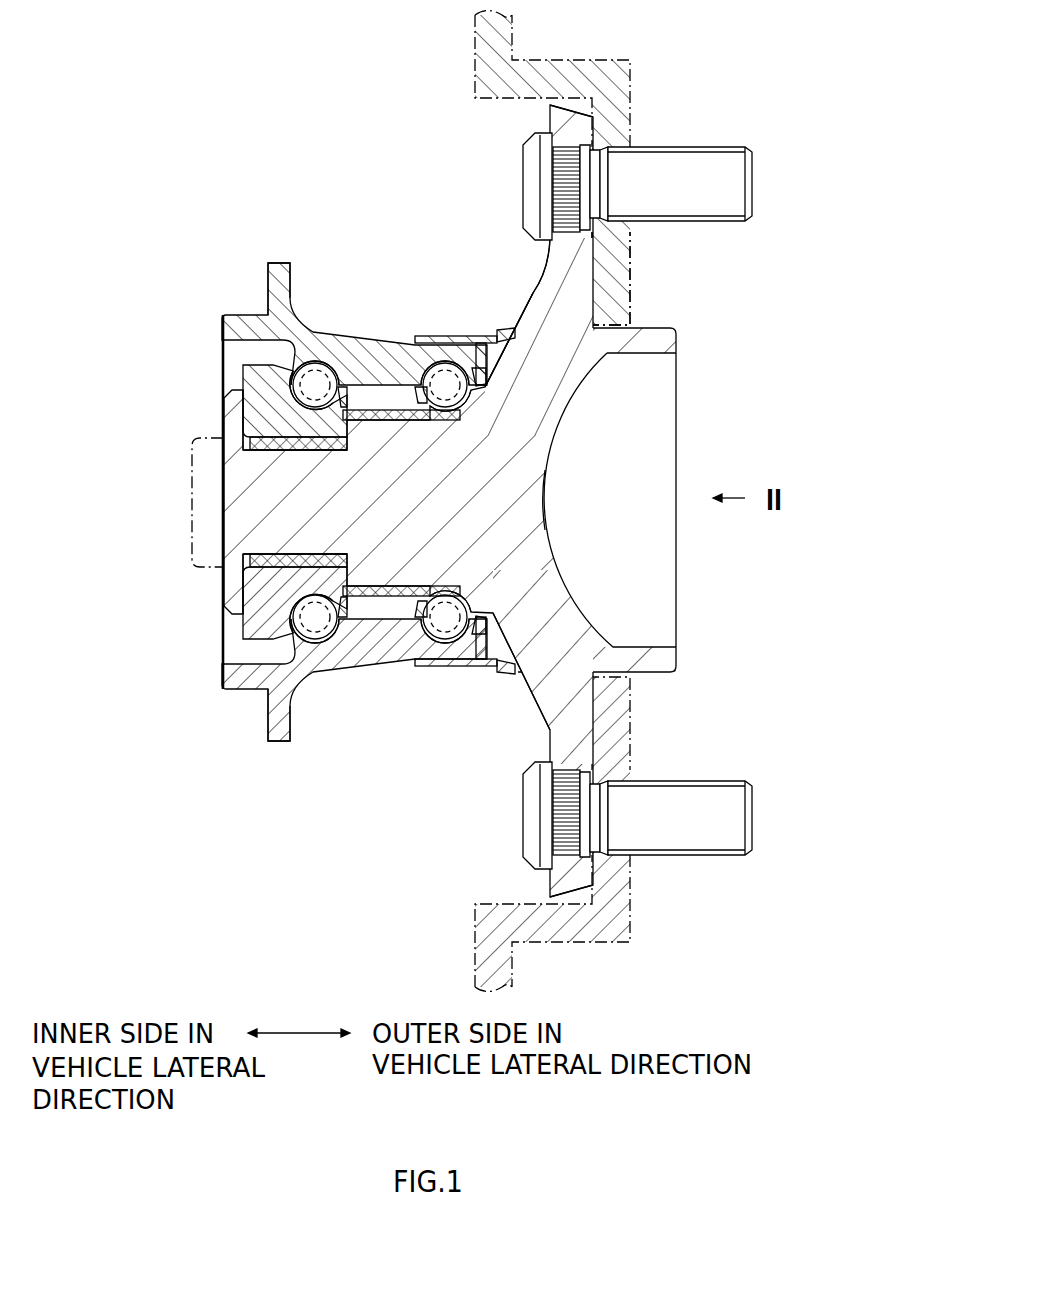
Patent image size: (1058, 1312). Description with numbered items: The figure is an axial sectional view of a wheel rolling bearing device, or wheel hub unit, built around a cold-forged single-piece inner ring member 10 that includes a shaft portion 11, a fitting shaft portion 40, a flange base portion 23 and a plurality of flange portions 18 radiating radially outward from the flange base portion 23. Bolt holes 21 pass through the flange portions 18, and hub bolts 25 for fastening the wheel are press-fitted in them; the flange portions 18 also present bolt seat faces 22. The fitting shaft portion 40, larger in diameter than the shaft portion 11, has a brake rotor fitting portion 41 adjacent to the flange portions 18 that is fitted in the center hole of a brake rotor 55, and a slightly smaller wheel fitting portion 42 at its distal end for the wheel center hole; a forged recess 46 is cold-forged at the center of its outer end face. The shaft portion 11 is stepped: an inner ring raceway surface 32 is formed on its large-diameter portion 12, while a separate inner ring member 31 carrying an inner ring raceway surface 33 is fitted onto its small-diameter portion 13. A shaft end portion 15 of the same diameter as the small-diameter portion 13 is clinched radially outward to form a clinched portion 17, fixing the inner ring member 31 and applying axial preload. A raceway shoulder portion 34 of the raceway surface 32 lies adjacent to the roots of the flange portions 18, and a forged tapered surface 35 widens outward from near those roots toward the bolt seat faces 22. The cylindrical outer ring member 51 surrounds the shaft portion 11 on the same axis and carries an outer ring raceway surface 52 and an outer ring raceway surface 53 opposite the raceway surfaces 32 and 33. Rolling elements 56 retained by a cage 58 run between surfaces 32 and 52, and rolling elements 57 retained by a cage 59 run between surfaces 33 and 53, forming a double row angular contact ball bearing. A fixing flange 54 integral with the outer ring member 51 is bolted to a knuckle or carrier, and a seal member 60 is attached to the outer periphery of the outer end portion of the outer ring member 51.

The inner ring member 10 is at (432, 500).
The shaft portion 11 is at (435, 719).
The large-diameter portion 12 is at (412, 592).
The small-diameter portion 13 is at (385, 580).
The shaft end portion 15 is at (199, 487).
The clinched portion 17 is at (223, 590).
The flange portions 18 is at (550, 120).
The bolt holes 21 is at (596, 497).
The bolt seat faces 22 is at (540, 230).
The flange base portion 23 is at (549, 344).
The hub bolts 25 is at (537, 177).
The inner ring member 31 is at (241, 445).
The inner ring raceway surface 32 is at (511, 374).
The inner ring raceway surface 33 is at (320, 364).
The raceway shoulder portion 34 is at (562, 402).
The tapered surface 35 is at (522, 312).
The fitting shaft portion 40 is at (727, 269).
The brake rotor fitting portion 41 is at (632, 314).
The wheel fitting portion 42 is at (653, 330).
The forged recess 46 is at (547, 516).
The outer ring member 51 is at (337, 480).
The outer ring raceway surface 52 is at (444, 336).
The outer ring raceway surface 53 is at (330, 372).
The fixing flange 54 is at (277, 285).
The brake rotor 55 is at (630, 88).
The rolling elements 56 is at (453, 421).
The rolling elements 57 is at (310, 402).
The cage 58 is at (407, 390).
The cage 59 is at (351, 438).
The seal member 60 is at (473, 674).